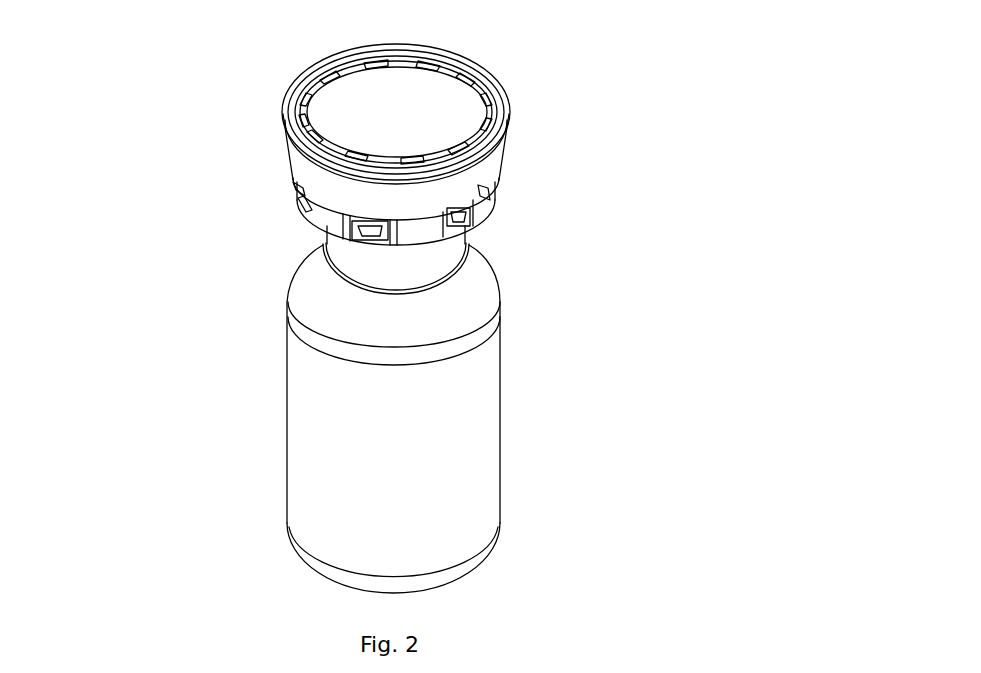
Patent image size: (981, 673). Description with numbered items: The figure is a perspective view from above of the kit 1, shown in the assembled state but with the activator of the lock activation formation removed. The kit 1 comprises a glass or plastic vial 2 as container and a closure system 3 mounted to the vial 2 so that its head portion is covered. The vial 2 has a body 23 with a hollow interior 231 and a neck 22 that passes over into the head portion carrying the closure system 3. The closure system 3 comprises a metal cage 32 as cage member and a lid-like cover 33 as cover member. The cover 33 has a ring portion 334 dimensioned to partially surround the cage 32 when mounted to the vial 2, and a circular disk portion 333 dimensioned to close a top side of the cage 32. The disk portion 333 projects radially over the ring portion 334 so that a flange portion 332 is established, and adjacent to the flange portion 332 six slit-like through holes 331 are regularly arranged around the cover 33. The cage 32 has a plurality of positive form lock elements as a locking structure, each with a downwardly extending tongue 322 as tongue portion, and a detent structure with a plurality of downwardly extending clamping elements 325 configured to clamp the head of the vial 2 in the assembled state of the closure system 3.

The kit 1 is at (236, 440).
The vial 2 is at (262, 357).
The neck 22 is at (443, 256).
The body 23 is at (452, 488).
The hollow interior 231 is at (410, 540).
The closure system 3 is at (518, 190).
The metal cage 32 is at (297, 207).
The tongue 322 is at (320, 214).
The clamping elements 325 is at (473, 219).
The cover 33 is at (518, 120).
The slit-like through holes 331 is at (328, 74).
The flange portion 332 is at (287, 126).
The circular disk portion 333 is at (427, 85).
The ring portion 334 is at (478, 173).